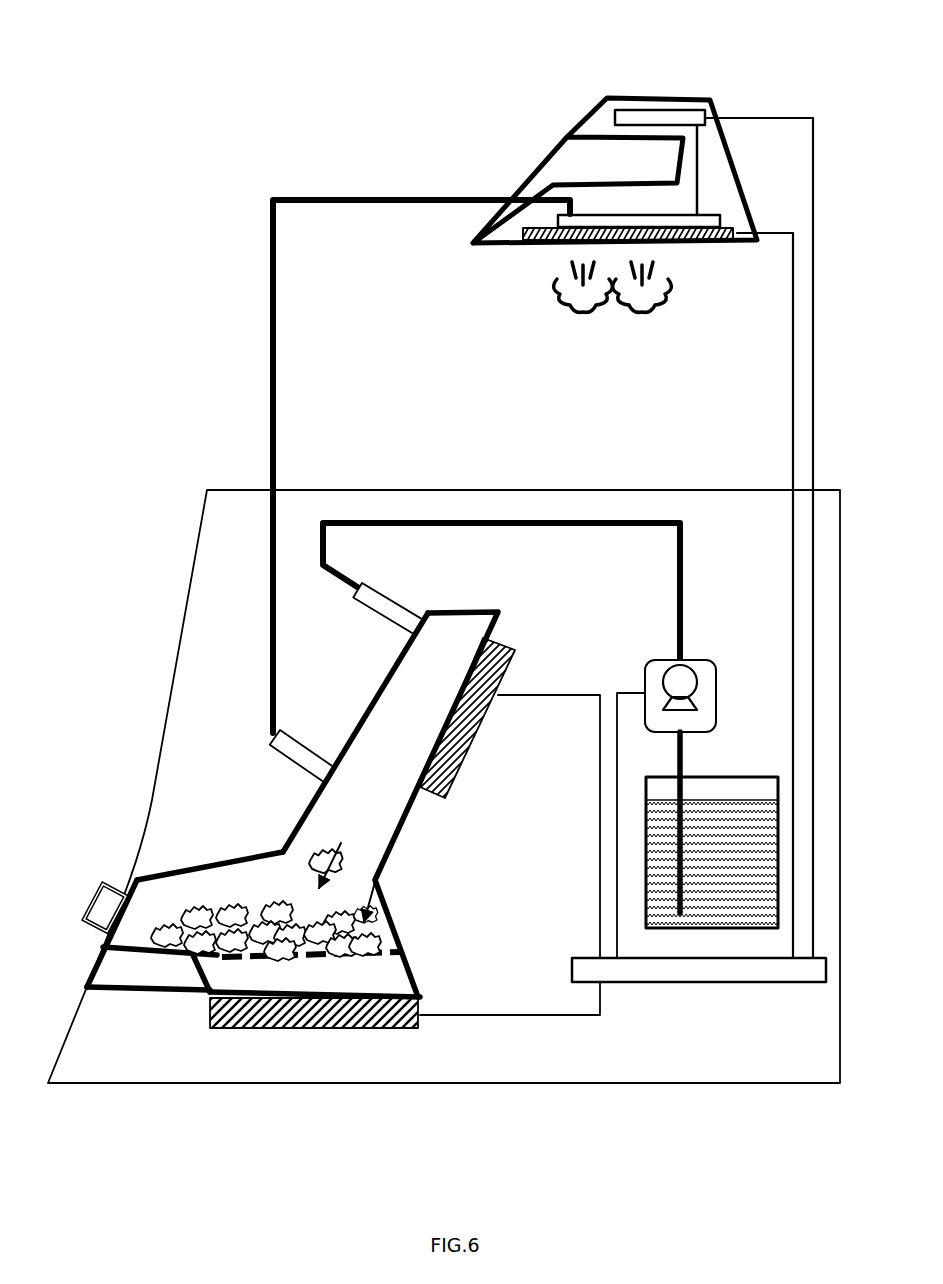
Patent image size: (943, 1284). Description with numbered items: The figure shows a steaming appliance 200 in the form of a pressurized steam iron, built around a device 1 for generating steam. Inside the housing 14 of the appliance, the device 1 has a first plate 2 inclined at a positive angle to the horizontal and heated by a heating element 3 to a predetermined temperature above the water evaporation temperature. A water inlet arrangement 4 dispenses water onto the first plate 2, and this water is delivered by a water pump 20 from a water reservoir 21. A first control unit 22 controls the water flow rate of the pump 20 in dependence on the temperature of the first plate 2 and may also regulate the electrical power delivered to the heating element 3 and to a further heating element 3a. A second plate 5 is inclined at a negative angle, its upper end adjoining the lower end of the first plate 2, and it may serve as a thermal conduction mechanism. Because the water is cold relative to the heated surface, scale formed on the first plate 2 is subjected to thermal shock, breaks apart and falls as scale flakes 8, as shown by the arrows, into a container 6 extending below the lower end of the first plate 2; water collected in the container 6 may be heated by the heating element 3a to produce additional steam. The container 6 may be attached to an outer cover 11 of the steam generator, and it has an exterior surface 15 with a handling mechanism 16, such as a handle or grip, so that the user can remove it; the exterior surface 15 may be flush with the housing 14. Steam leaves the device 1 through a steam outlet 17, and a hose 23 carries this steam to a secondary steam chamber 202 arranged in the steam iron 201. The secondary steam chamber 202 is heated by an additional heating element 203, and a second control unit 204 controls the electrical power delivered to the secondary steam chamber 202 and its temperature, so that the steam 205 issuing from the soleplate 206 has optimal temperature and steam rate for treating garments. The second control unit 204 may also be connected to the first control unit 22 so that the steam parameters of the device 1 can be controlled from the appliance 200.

The steaming appliance 200 is at (150, 76).
The steam iron 201 is at (612, 98).
The secondary steam chamber 202 is at (592, 215).
The additional heating element 203 is at (515, 243).
The second control unit 204 is at (661, 110).
The steam 205 is at (583, 313).
The soleplate 206 is at (735, 242).
The hose 23 is at (271, 290).
The device for generating steam 1 is at (543, 613).
The first plate 2 is at (328, 853).
The heating element 3 is at (473, 745).
The heating element 3a is at (317, 1028).
The water inlet arrangement 4 is at (378, 613).
The second plate 5 is at (385, 907).
The container 6 is at (393, 937).
The scale flakes 8 is at (268, 900).
The outer cover 11 is at (213, 860).
The housing 14 is at (157, 773).
The exterior surface 15 is at (130, 882).
The handling mechanism 16 is at (93, 932).
The steam outlet 17 is at (297, 729).
The water pump 20 is at (717, 670).
The water reservoir 21 is at (750, 775).
The first control unit 22 is at (660, 985).